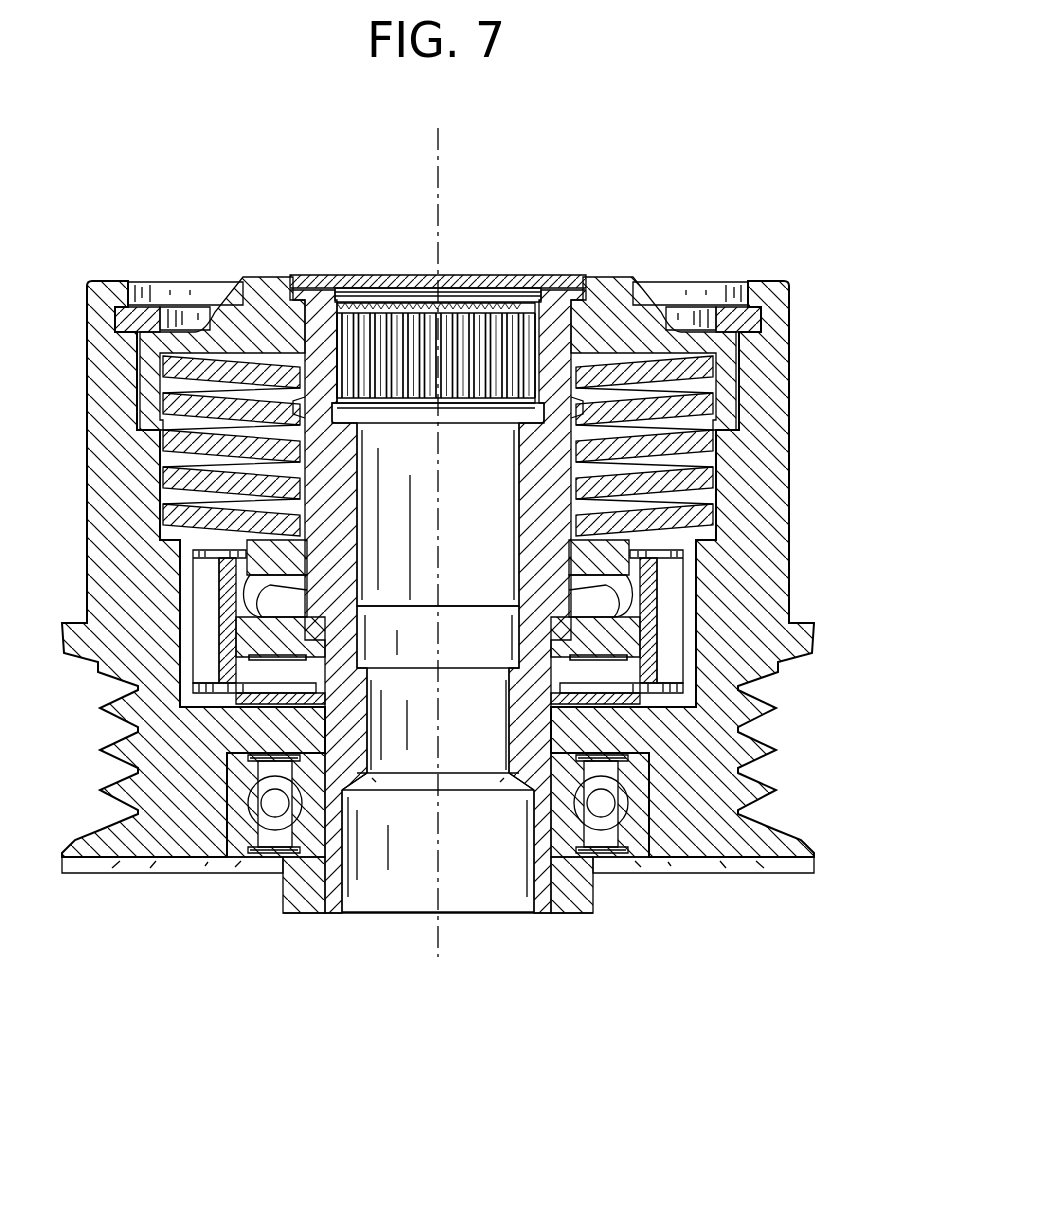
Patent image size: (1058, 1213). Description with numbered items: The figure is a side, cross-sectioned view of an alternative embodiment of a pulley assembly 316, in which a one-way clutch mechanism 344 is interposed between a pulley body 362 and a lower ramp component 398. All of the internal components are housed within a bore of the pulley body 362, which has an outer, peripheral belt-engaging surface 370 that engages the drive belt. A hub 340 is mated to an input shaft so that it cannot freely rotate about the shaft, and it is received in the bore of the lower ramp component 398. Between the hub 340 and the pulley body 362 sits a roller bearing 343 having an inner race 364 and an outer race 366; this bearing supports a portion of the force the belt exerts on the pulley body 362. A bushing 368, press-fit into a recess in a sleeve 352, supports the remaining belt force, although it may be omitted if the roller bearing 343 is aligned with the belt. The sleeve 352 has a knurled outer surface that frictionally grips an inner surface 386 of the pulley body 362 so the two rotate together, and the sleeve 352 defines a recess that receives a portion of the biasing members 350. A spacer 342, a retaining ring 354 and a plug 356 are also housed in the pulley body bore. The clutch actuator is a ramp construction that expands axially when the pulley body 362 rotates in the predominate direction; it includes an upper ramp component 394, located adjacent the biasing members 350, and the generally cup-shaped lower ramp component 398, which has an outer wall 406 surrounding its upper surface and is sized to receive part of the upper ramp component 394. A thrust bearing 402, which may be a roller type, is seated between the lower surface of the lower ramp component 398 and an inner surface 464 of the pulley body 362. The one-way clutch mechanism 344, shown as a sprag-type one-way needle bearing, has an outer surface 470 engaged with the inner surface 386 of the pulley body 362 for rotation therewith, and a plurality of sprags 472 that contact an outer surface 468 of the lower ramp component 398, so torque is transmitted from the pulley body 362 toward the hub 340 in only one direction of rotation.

The pulley assembly 316 is at (639, 957).
The hub 340 is at (327, 294).
The spacer 342 is at (572, 905).
The roller bearing 343 is at (233, 790).
The one-way clutch mechanism 344 is at (665, 576).
The biasing members 350 is at (697, 370).
The sleeve 352 is at (247, 300).
The retaining ring 354 is at (722, 298).
The plug 356 is at (530, 278).
The pulley body 362 is at (766, 433).
The inner race 364 is at (308, 838).
The outer race 366 is at (237, 770).
The bushing 368 is at (588, 312).
The belt-engaging surface 370 is at (775, 703).
The inner surface 386 is at (652, 583).
The upper ramp component 394 is at (707, 517).
The lower ramp component 398 is at (610, 725).
The thrust bearing 402 is at (692, 687).
The outer wall 406 is at (702, 555).
The inner surface 464 is at (748, 803).
The outer surface 468 is at (682, 667).
The outer surface 470 is at (603, 566).
The sprags 472 is at (676, 648).